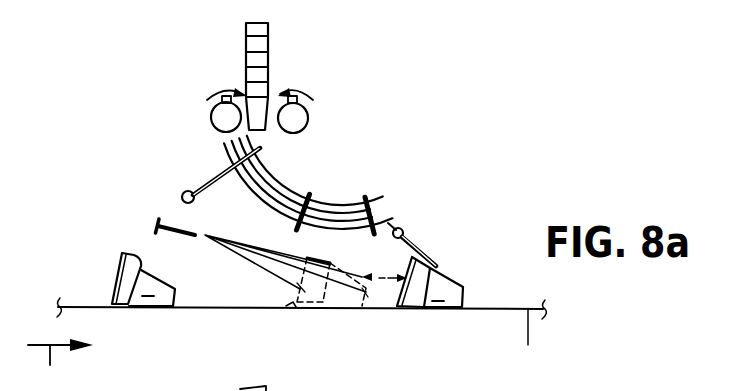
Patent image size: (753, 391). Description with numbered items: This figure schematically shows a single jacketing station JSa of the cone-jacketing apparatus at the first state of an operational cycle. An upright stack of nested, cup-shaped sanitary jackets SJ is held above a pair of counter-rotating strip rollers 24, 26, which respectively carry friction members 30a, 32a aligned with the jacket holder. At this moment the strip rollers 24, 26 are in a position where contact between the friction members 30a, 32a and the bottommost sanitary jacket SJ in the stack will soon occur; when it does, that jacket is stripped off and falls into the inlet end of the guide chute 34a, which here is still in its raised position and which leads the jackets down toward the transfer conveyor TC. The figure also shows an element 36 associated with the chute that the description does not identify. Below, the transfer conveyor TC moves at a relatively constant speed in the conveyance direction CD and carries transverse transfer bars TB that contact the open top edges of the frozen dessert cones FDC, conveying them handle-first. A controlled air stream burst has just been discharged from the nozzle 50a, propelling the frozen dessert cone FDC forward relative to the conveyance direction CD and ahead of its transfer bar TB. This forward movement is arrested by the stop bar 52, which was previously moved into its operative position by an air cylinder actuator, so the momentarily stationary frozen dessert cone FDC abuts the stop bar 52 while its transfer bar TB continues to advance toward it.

The jacketing station JSa is at (222, 48).
The sanitary jacket SJ is at (266, 88).
The strip roller 26 is at (223, 118).
The strip roller 24 is at (304, 123).
The friction member 32a is at (220, 94).
The friction member 30a is at (300, 93).
The guide chute 34a is at (348, 206).
The clamp rod with ball end 36 is at (214, 182).
The stop bar 52 is at (417, 243).
The nozzle 50a is at (169, 236).
The frozen dessert cone FDC is at (114, 272).
The transfer bar TB is at (100, 306).
The transfer conveyor TC is at (535, 340).
The conveyance direction CD is at (60, 365).